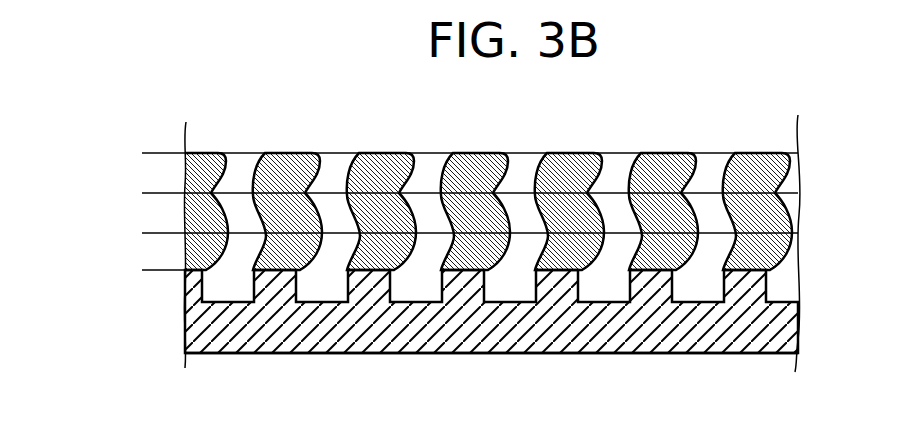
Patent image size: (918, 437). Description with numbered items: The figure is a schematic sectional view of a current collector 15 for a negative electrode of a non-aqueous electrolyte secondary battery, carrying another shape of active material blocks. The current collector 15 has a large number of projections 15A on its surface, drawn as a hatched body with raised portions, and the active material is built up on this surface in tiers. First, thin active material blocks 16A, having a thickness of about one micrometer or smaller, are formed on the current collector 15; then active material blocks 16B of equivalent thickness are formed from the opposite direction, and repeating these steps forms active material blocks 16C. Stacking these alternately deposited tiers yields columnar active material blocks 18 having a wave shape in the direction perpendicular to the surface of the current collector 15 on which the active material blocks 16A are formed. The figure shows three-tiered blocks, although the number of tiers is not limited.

The current collector 15 is at (340, 332).
The projections 15A is at (390, 355).
The active material blocks 16A is at (160, 233).
The active material blocks 16B is at (160, 193).
The active material blocks 16C is at (160, 193).
The columnar active material blocks 18 is at (663, 157).